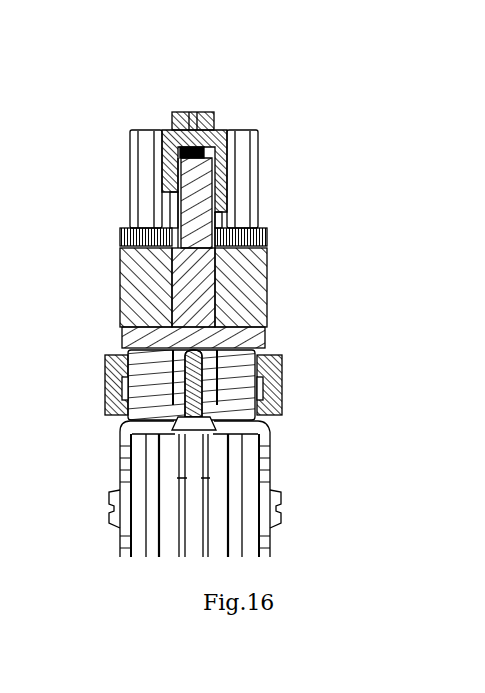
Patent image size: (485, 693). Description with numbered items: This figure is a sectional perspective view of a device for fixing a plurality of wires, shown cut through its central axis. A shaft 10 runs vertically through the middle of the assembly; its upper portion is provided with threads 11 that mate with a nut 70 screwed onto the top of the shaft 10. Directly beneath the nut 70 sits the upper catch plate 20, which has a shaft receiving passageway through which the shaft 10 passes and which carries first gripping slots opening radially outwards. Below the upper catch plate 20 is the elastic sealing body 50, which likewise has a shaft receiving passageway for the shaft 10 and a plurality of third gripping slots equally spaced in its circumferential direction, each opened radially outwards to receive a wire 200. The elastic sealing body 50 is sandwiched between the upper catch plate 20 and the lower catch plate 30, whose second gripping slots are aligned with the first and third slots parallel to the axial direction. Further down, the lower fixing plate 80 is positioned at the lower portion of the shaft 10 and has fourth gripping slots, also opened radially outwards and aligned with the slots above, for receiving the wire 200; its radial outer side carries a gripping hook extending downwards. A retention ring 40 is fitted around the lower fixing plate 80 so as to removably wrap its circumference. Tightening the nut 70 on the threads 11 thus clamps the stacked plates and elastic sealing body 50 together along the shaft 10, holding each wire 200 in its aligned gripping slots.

The shaft 10 is at (185, 292).
The threads 11 is at (203, 177).
The upper catch plate 20 is at (135, 225).
The lower catch plate 30 is at (133, 343).
The retention ring 40 is at (108, 392).
The elastic sealing body 50 is at (245, 297).
The nut 70 is at (172, 145).
The lower fixing plate 80 is at (235, 387).
The wire 200 is at (245, 213).